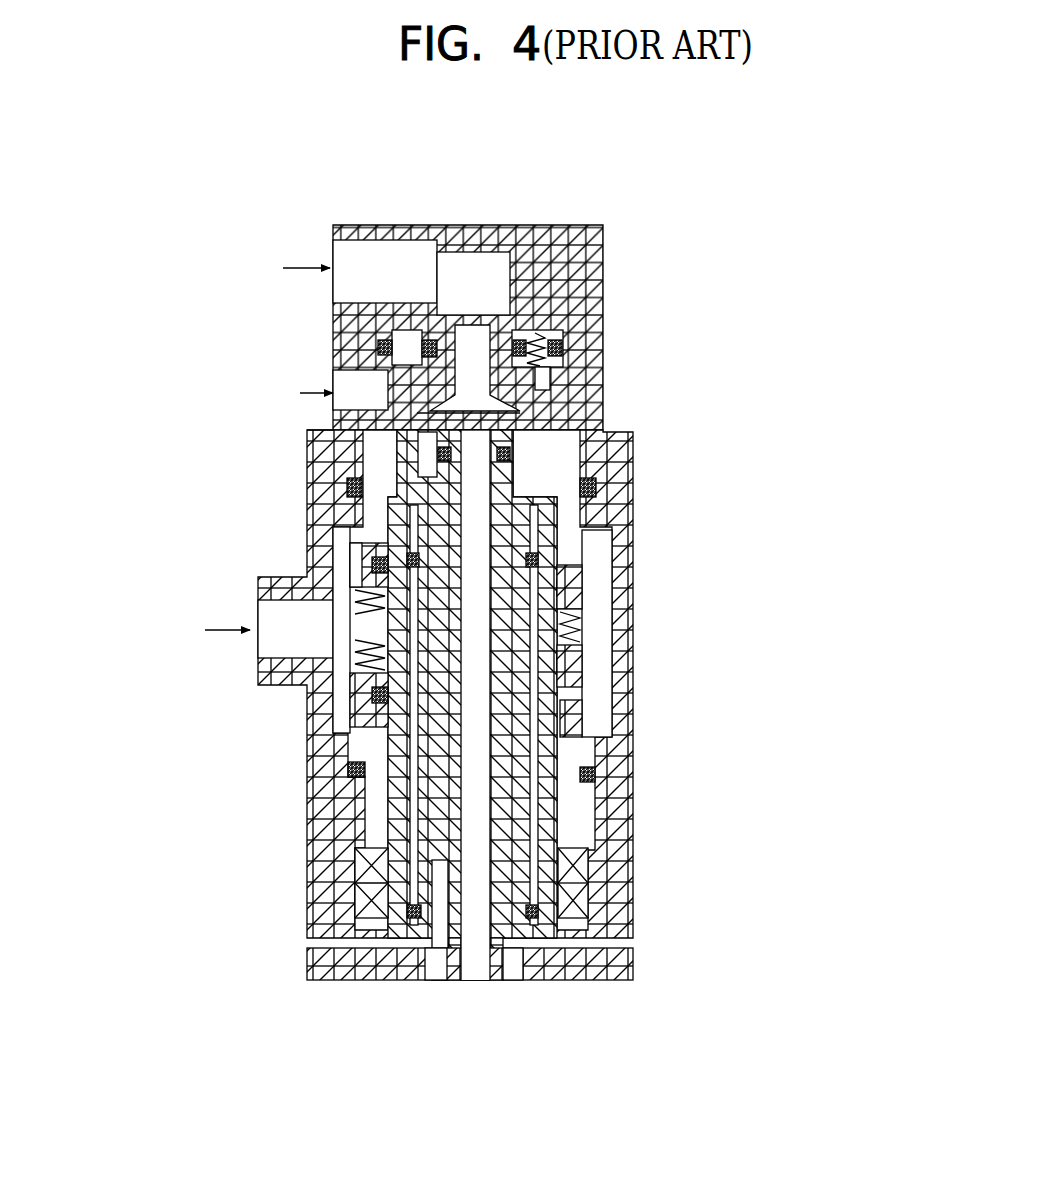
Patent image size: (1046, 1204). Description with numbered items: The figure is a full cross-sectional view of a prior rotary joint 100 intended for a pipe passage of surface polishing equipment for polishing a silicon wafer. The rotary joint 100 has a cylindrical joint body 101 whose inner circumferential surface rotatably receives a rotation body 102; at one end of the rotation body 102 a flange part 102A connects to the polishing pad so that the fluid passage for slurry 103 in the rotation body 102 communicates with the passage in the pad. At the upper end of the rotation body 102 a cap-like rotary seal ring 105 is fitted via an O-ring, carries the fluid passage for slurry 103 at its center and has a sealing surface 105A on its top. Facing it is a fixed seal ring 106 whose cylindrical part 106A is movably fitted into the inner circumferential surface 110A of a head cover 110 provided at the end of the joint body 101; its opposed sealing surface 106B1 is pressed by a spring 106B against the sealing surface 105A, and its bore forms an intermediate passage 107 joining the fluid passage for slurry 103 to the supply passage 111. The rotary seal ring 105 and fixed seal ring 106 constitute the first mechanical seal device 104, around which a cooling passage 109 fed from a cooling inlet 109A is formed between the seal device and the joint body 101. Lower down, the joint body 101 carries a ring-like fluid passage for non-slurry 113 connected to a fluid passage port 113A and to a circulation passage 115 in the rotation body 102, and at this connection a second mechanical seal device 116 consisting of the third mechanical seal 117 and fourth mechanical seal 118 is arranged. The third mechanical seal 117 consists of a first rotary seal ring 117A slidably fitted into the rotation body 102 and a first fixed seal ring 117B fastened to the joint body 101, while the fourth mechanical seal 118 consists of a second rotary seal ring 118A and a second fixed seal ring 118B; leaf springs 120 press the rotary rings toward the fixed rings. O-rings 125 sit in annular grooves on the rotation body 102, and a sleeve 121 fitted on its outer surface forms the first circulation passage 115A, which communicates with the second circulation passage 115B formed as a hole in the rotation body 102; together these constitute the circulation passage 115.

The rotary joint 100 is at (655, 212).
The joint body 101 is at (305, 838).
The rotation body 102 is at (305, 965).
The flange part 102A is at (632, 966).
The fluid passage for slurry 103 is at (480, 800).
The first mechanical seal device 104 is at (537, 437).
The rotary seal ring 105 is at (537, 455).
The sealing surface 105A is at (422, 352).
The fixed seal ring 106 is at (560, 376).
The cylindrical part 106A is at (520, 342).
The valve spring 106B is at (546, 352).
The opposed sealing surface 106B1 is at (542, 405).
The intermediate passage 107 is at (378, 345).
The cooling passage 109 is at (400, 446).
The cooling inlet 109A is at (355, 393).
The head cover 110 is at (553, 270).
The inner circumferential surface 110A is at (454, 332).
The supply passage 111 is at (396, 268).
The fluid passage for non-slurry 113 is at (350, 740).
The fluid passage port 113A is at (340, 603).
The circulation passage 115 is at (347, 772).
The first circulation passage 115A is at (590, 860).
The second circulation passage 115B is at (362, 882).
The second mechanical seal device 116 is at (256, 672).
The third mechanical seal 117 is at (342, 546).
The first rotary seal ring 117A is at (348, 557).
The first fixed seal ring 117B is at (346, 488).
The fourth mechanical seal 118 is at (613, 716).
The second rotary seal ring 118A is at (582, 708).
The second fixed seal ring 118B is at (592, 772).
The leaf spring 120 is at (370, 606).
The sleeve 121 is at (580, 636).
The O-ring 125 is at (422, 560).